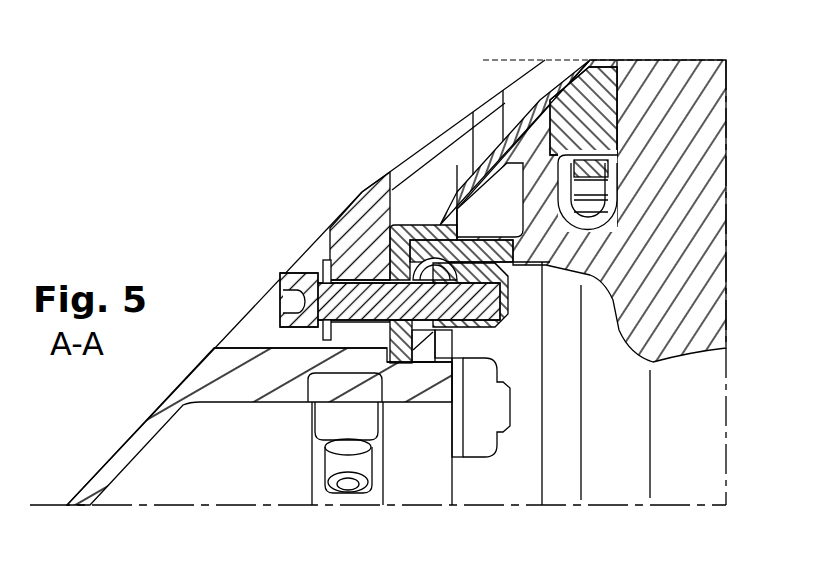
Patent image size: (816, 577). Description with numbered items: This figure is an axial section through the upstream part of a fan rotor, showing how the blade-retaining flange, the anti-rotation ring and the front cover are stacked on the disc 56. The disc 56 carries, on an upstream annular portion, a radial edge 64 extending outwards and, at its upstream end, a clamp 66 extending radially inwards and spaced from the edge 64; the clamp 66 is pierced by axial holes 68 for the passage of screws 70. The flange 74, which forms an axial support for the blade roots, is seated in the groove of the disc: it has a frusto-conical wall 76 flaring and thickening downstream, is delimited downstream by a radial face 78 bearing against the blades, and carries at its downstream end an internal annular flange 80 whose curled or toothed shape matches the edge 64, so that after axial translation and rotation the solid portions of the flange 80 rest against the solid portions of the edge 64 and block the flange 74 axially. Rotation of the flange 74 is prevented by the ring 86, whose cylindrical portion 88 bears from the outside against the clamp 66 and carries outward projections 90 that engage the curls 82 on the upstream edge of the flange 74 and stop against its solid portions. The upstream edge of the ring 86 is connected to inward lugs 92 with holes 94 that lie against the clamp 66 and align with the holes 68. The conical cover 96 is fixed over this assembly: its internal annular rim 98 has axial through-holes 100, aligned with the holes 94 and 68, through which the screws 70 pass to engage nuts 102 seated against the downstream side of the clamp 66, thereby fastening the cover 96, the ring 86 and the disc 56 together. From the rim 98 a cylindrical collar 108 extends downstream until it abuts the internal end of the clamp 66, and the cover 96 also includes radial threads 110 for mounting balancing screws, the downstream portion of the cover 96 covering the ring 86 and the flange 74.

The disc 56 is at (665, 272).
The radial edge 64 is at (540, 200).
The clamp 66 is at (455, 332).
The axial holes 68 is at (497, 307).
The screws 70 is at (321, 303).
The flange 74 is at (537, 128).
The frusto-conical wall 76 is at (589, 115).
The radial face 78 is at (618, 102).
The internal annular flange 80 is at (586, 162).
The curls 82 is at (452, 197).
The ring 86 is at (353, 207).
The cylindrical portion 88 is at (387, 207).
The projections 90 is at (427, 207).
The lugs 92 is at (398, 352).
The holes 94 is at (388, 362).
The cover 96 is at (120, 452).
The internal annular rim 98 is at (340, 207).
The axial through-holes 100 is at (332, 268).
The nuts 102 is at (470, 345).
The cylindrical collar 108 is at (400, 392).
The radial threads 110 is at (318, 433).